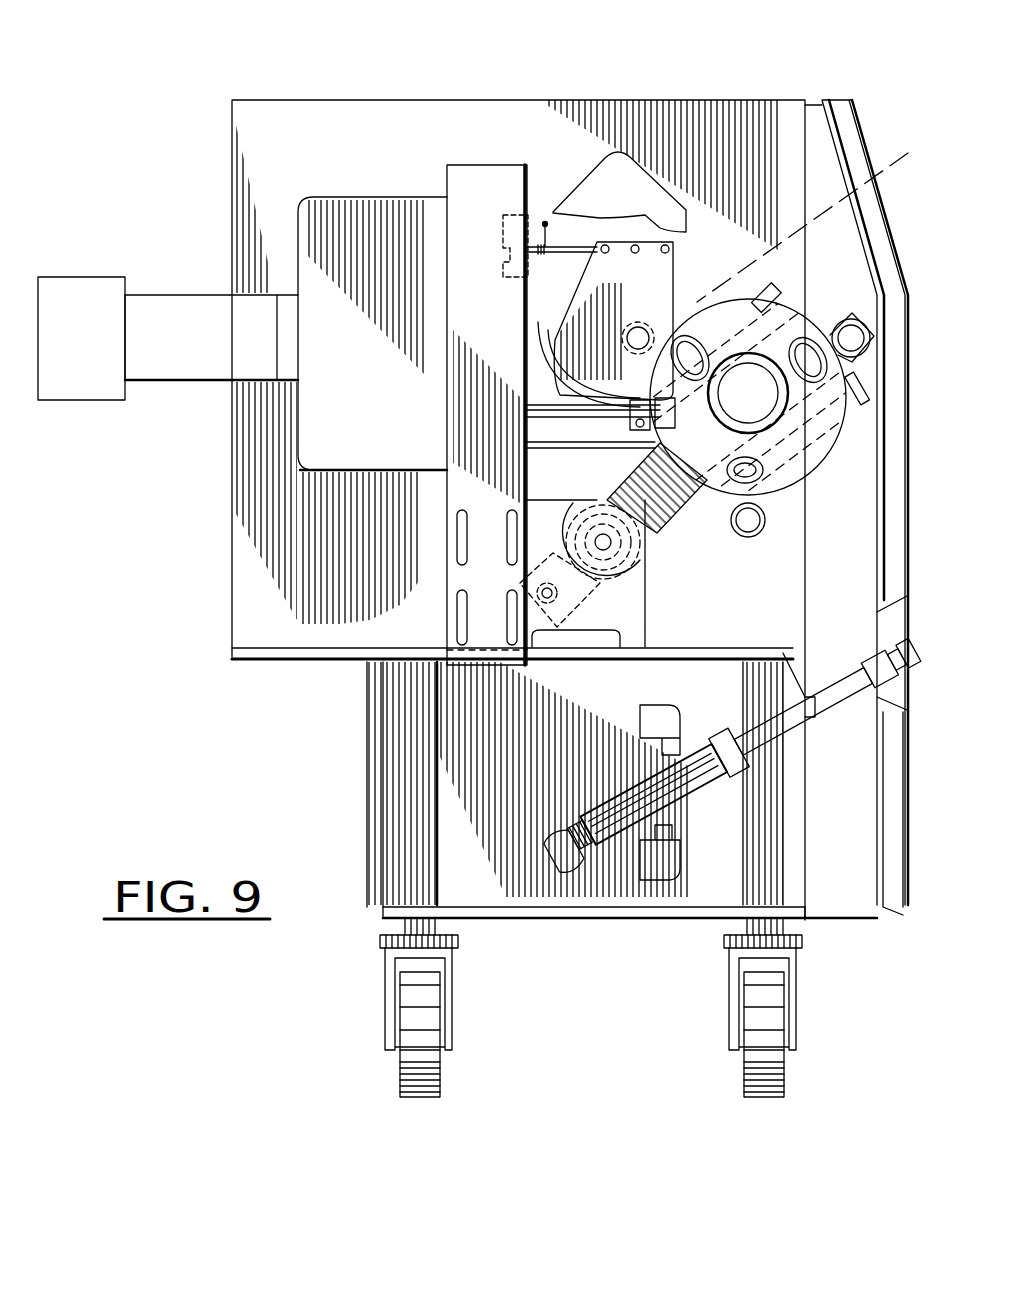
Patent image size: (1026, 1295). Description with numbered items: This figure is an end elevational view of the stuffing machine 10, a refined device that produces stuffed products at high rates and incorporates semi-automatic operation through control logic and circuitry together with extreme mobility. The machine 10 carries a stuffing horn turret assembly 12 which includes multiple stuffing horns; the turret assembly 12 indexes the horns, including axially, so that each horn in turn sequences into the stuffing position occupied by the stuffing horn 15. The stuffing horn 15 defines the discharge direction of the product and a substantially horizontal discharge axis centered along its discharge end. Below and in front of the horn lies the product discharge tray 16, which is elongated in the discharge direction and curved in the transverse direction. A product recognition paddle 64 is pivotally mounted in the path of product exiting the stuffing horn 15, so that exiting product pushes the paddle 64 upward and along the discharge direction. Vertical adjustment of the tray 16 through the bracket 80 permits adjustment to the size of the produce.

The stuffing machine 10 is at (806, 88).
The stuffing horn turret assembly 12 is at (800, 470).
The stuffing horn 15 is at (817, 219).
The product discharge tray 16 is at (542, 335).
The product recognition paddle 64 is at (673, 278).
The bracket 80 is at (460, 575).